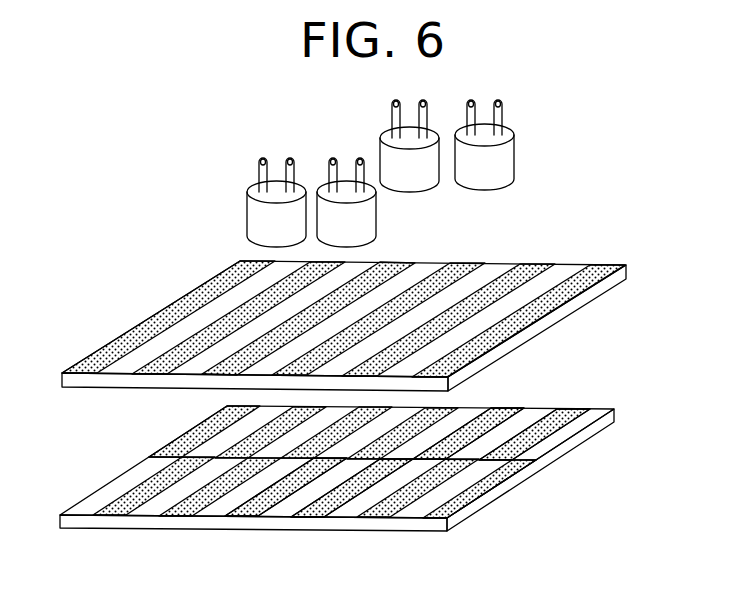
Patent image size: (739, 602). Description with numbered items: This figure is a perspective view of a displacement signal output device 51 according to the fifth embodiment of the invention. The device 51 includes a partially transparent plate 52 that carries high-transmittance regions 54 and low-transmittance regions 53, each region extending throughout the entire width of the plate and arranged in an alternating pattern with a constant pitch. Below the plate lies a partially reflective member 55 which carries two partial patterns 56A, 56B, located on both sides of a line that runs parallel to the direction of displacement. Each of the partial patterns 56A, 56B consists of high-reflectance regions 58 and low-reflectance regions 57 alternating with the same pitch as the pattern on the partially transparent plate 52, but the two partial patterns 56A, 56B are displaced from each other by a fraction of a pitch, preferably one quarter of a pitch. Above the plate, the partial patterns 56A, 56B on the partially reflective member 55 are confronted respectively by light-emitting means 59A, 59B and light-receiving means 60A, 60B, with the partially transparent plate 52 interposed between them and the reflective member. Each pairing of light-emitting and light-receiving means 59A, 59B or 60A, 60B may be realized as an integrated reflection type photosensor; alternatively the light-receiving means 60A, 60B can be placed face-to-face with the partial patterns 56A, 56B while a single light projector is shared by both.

The displacement signal output device 51 is at (630, 186).
The partially transparent plate 52 is at (583, 298).
The low-transmittance regions 53 is at (466, 265).
The high-transmittance regions 54 is at (176, 376).
The partially reflective member 55 is at (488, 503).
The partial pattern 56A is at (214, 400).
The partial pattern 56B is at (133, 452).
The low-reflectance regions 57 is at (447, 409).
The high-reflectance regions 58 is at (523, 409).
The light-emitting means 59A is at (388, 152).
The light-emitting means 59B is at (254, 218).
The light-receiving means 60A is at (507, 160).
The light-receiving means 60B is at (369, 217).